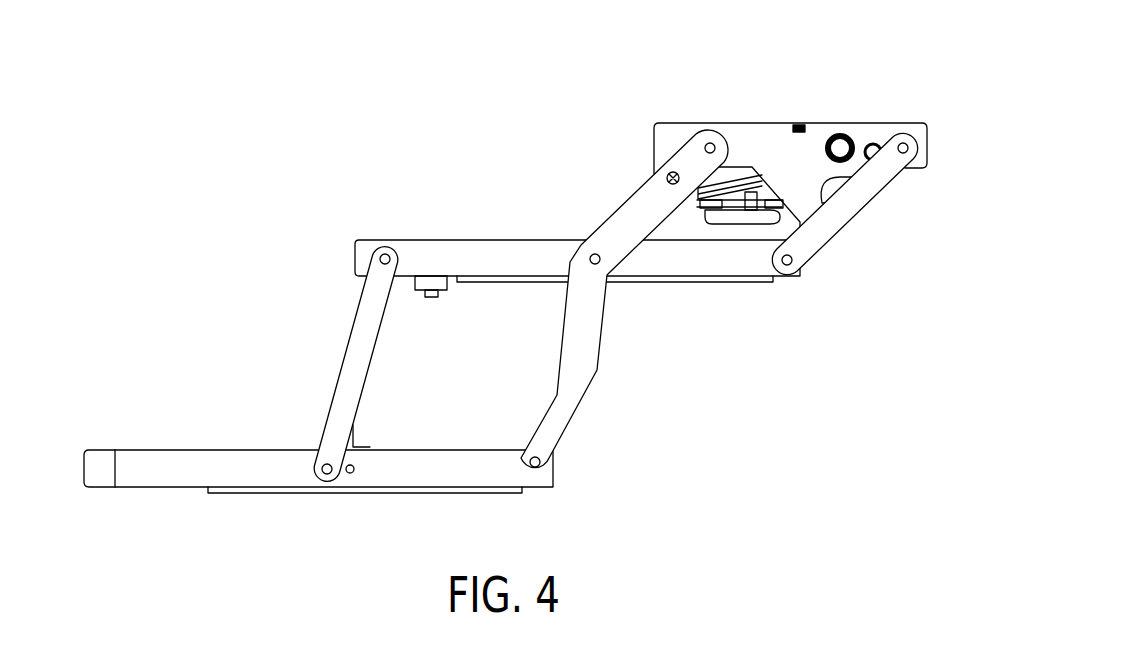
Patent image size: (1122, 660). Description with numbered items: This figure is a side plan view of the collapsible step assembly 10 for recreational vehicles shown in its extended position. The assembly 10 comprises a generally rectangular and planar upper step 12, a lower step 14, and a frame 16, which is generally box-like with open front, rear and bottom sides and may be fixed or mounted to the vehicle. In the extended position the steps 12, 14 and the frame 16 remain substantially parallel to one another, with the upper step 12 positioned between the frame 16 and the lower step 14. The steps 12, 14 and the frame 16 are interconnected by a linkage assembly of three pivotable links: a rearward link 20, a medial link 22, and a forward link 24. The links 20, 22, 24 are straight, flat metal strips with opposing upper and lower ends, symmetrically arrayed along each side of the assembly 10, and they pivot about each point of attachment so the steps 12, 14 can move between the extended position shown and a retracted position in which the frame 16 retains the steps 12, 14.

The collapsible step assembly 10 is at (190, 198).
The upper step 12 is at (512, 242).
The lower step 14 is at (203, 455).
The frame 16 is at (872, 125).
The rearward link 20 is at (845, 207).
The medial link 22 is at (592, 345).
The forward link 24 is at (330, 433).